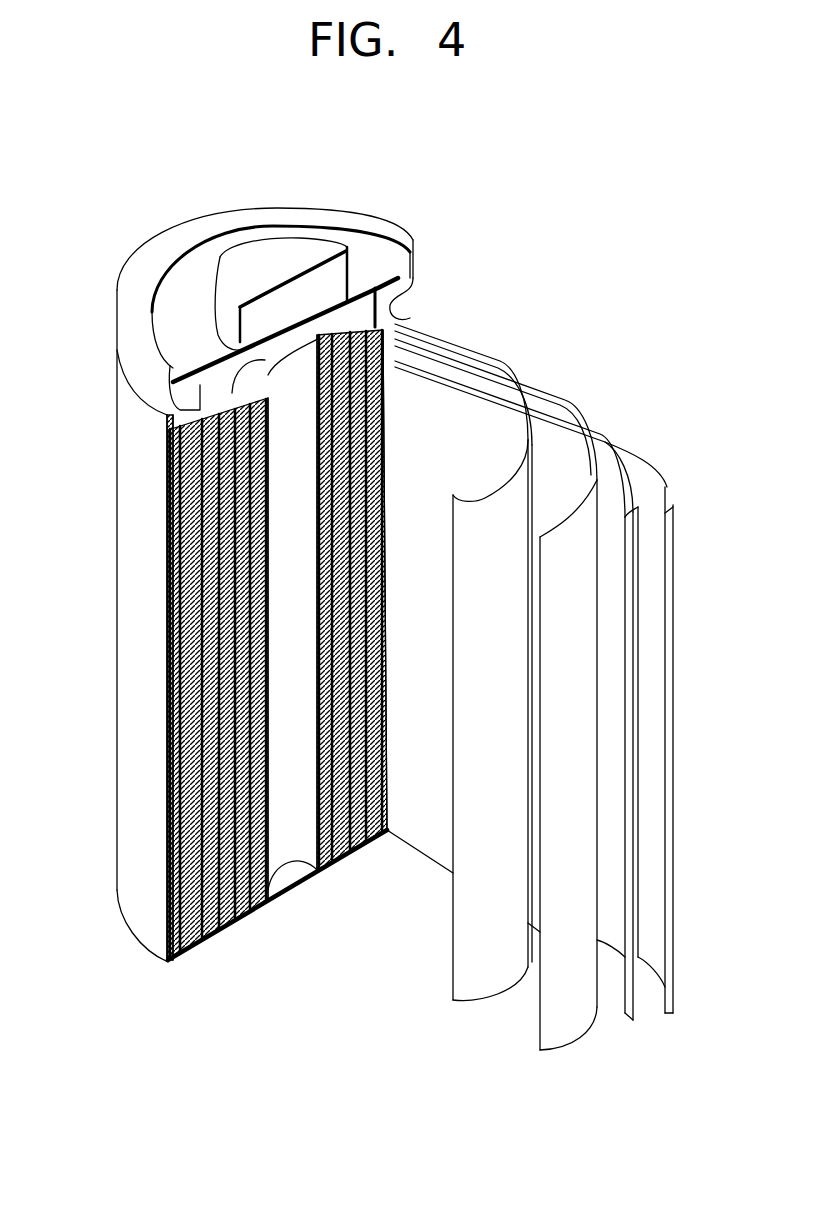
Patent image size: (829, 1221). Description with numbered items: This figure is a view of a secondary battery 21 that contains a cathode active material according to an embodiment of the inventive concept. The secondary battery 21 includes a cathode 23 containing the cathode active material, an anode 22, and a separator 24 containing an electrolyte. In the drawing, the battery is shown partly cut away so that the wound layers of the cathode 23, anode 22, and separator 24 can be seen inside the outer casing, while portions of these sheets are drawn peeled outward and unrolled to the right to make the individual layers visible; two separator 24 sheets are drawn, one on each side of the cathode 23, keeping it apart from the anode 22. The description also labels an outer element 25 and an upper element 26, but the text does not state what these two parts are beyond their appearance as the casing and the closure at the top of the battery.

The secondary battery 21 is at (487, 248).
The anode 22 is at (670, 480).
The cathode 23 is at (552, 435).
The separator 24 is at (487, 393).
The can 25 is at (135, 647).
The cap assembly 26 is at (258, 262).